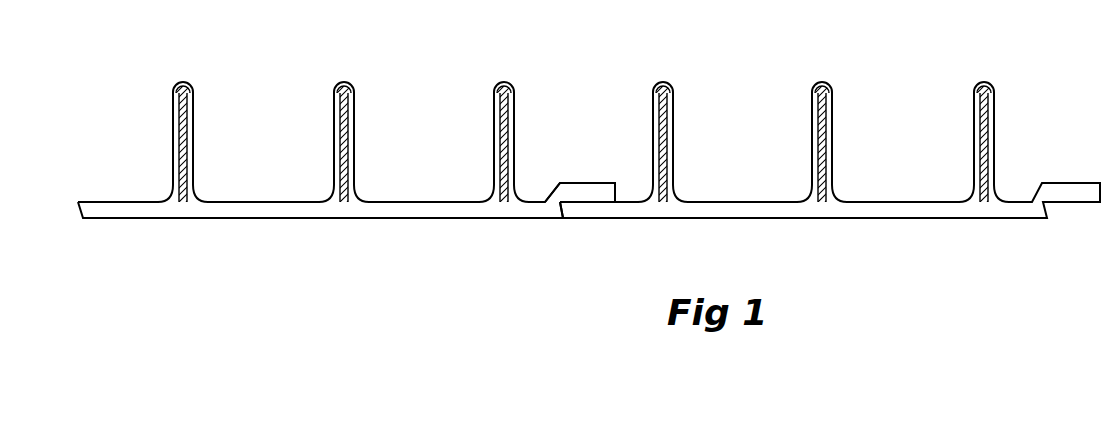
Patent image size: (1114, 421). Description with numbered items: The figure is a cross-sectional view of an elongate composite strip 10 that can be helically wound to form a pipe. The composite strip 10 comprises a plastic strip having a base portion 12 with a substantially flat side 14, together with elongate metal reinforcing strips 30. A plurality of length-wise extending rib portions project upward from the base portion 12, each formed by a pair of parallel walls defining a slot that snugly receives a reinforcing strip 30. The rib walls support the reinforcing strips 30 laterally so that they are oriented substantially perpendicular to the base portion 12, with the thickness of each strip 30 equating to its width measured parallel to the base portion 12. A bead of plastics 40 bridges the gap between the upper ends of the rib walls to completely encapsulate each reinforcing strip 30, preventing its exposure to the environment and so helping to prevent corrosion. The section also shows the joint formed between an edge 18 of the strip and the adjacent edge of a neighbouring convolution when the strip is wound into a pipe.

The composite strip 10 is at (145, 168).
The base portion 12 is at (123, 208).
The substantially flat side 14 is at (273, 208).
The edge 18 is at (583, 172).
The metal reinforcing strip 30 is at (992, 132).
The bead of plastics 40 is at (342, 82).